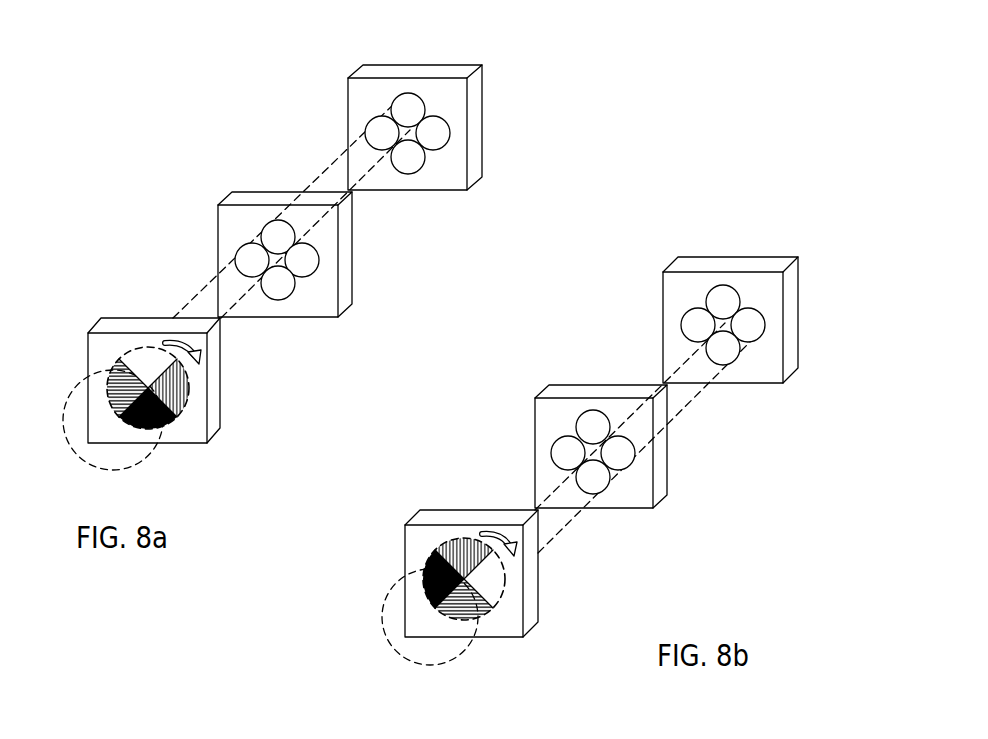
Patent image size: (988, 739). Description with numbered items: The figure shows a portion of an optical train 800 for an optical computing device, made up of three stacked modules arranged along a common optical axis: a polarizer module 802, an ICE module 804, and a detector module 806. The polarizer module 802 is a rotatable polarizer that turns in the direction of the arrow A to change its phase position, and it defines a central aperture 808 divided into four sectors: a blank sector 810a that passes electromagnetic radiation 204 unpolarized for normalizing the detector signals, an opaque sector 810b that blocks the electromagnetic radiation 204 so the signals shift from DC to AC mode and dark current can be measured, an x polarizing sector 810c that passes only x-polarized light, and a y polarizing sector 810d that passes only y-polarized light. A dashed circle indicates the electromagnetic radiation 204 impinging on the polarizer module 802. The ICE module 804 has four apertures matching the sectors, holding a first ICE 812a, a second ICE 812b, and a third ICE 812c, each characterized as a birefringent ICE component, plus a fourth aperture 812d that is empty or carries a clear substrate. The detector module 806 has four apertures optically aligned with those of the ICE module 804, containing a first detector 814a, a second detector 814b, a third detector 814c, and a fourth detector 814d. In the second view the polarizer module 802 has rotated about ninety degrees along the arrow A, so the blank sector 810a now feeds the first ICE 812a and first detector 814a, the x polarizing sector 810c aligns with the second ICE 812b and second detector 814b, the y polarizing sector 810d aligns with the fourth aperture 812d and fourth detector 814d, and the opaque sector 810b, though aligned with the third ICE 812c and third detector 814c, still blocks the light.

In FIG. 8a, the optical train 800 is at (208, 128).
In FIG. 8b, the optical train 800 is at (553, 358).
In FIG. 8a, the polarizer module 802 is at (215, 428).
In FIG. 8b, the polarizer module 802 is at (532, 620).
In FIG. 8a, the ICE module 804 is at (345, 300).
In FIG. 8b, the ICE module 804 is at (660, 492).
In FIG. 8a, the detector module 806 is at (475, 172).
In FIG. 8b, the detector module 806 is at (792, 365).
In FIG. 8a, the central aperture 808 is at (116, 350).
In FIG. 8b, the central aperture 808 is at (433, 544).
In FIG. 8a, the blank sector 810a is at (147, 356).
In FIG. 8b, the blank sector 810a is at (498, 586).
In FIG. 8a, the opaque sector 810b is at (165, 422).
In FIG. 8b, the opaque sector 810b is at (428, 566).
In FIG. 8a, the x polarizing sector 810c is at (184, 390).
In FIG. 8b, the x polarizing sector 810c is at (478, 615).
In FIG. 8a, the y polarizing sector 810d is at (117, 388).
In FIG. 8b, the y polarizing sector 810d is at (463, 547).
In FIG. 8a, the first ICE 812a is at (306, 258).
In FIG. 8b, the first ICE 812a is at (622, 452).
In FIG. 8a, the second ICE 812b is at (282, 290).
In FIG. 8b, the second ICE 812b is at (597, 483).
In FIG. 8a, the third ICE 812c is at (250, 258).
In FIG. 8b, the third ICE 812c is at (565, 450).
In FIG. 8a, the fourth aperture 812d is at (278, 232).
In FIG. 8b, the fourth aperture 812d is at (593, 420).
In FIG. 8a, the first detector 814a is at (437, 133).
In FIG. 8b, the first detector 814a is at (752, 325).
In FIG. 8a, the second detector 814b is at (412, 164).
In FIG. 8b, the second detector 814b is at (727, 354).
In FIG. 8a, the third detector 814c is at (380, 130).
In FIG. 8b, the third detector 814c is at (695, 322).
In FIG. 8a, the fourth detector 814d is at (408, 104).
In FIG. 8b, the fourth detector 814d is at (723, 296).
In FIG. 8a, the electromagnetic radiation 204 is at (64, 422).
In FIG. 8b, the electromagnetic radiation 204 is at (383, 615).
In FIG. 8a, the arrow A is at (199, 352).
In FIG. 8b, the arrow A is at (514, 545).